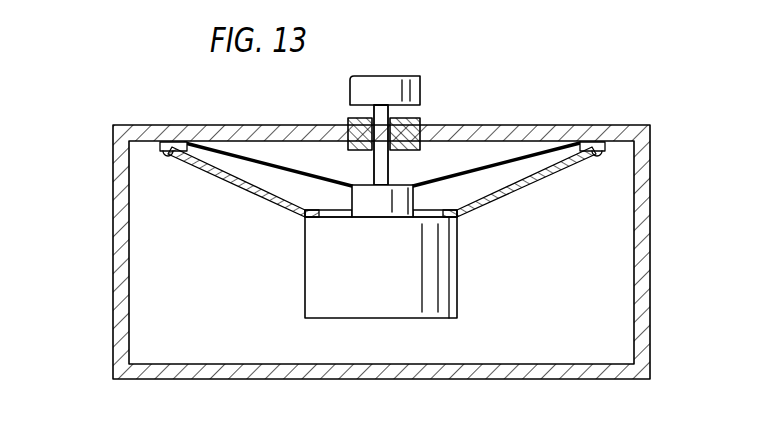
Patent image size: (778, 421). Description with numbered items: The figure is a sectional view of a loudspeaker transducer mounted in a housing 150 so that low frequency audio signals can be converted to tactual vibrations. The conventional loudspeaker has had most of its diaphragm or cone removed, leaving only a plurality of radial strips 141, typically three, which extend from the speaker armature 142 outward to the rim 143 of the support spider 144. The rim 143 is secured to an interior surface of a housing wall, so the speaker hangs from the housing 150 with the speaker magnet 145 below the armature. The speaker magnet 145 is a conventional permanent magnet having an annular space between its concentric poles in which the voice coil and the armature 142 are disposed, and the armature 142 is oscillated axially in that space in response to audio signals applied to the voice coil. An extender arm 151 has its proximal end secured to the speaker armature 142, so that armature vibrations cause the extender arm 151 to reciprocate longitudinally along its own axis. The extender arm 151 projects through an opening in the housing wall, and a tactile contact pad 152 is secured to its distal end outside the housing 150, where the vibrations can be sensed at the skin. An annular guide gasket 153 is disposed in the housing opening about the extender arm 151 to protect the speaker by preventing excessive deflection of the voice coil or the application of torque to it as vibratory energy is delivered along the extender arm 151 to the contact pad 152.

The radial strips 141 is at (240, 143).
The speaker armature 142 is at (418, 192).
The rim 143 is at (158, 150).
The support spider 144 is at (548, 165).
The speaker magnet 145 is at (392, 303).
The housing 150 is at (650, 311).
The extender arm 151 is at (345, 160).
The tactile contact pad 152 is at (420, 88).
The annular guide gasket 153 is at (420, 122).